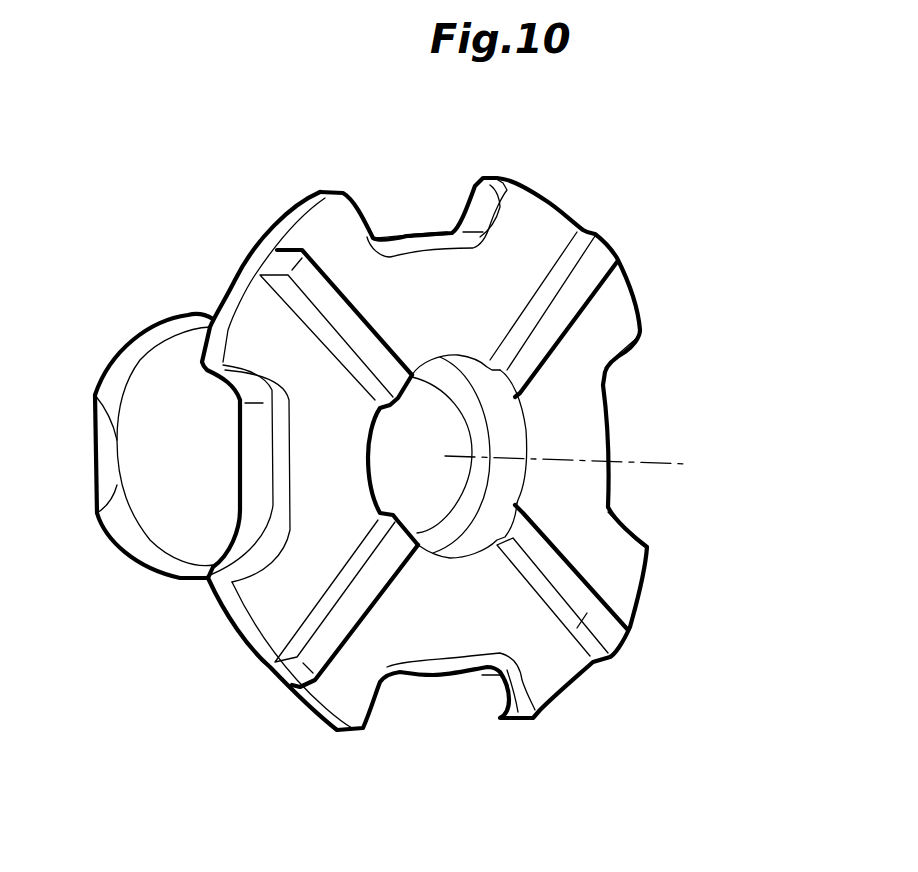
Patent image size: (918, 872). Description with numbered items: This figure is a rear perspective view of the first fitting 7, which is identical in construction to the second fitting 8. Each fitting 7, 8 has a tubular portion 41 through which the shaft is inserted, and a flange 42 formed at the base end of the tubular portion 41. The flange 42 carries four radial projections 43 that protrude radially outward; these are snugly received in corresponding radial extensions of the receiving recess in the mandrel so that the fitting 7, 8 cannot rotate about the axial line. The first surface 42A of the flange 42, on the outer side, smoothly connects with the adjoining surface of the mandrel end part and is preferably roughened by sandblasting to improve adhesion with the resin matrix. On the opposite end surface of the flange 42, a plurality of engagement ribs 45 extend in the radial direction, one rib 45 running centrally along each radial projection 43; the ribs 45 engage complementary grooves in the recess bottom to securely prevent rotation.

The first fitting 7 is at (395, 498).
The second fitting 8 is at (103, 303).
The tubular portion 41 is at (160, 528).
The flange 42 is at (422, 682).
The first surface 42A is at (460, 643).
The radial projection 43 is at (346, 707).
The engagement rib 45 is at (325, 640).